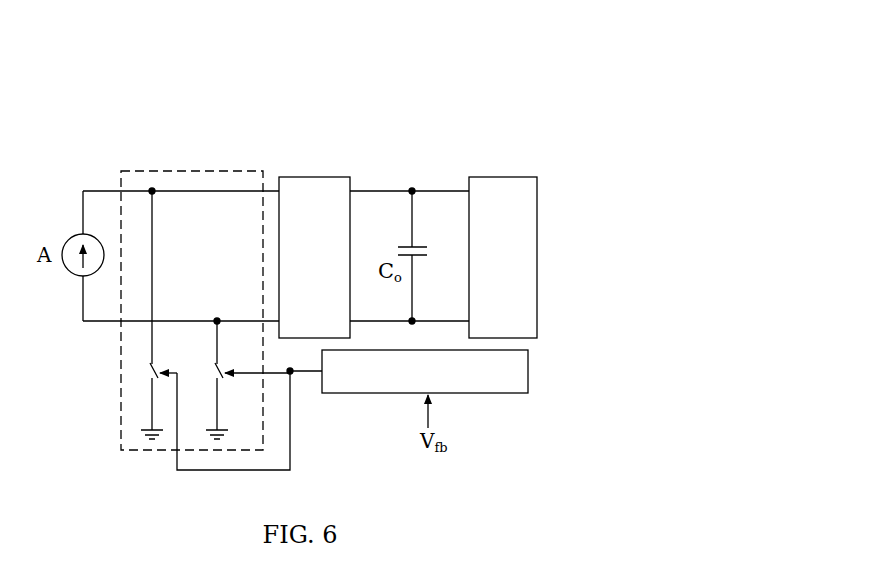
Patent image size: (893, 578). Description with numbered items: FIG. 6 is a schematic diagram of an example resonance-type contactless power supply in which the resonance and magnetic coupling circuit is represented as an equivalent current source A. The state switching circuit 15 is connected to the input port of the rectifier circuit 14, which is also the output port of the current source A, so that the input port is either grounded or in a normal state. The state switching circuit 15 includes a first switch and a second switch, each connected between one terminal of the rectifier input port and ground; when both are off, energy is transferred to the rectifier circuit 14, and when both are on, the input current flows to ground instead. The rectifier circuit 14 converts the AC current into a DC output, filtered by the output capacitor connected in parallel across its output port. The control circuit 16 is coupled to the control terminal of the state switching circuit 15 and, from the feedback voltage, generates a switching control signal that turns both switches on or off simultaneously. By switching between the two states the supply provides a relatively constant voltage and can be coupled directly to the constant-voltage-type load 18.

The rectifier circuit 14 is at (328, 177).
The state switching circuit 15 is at (189, 171).
The control circuit 16 is at (528, 385).
The constant-voltage-type load 18 is at (537, 198).